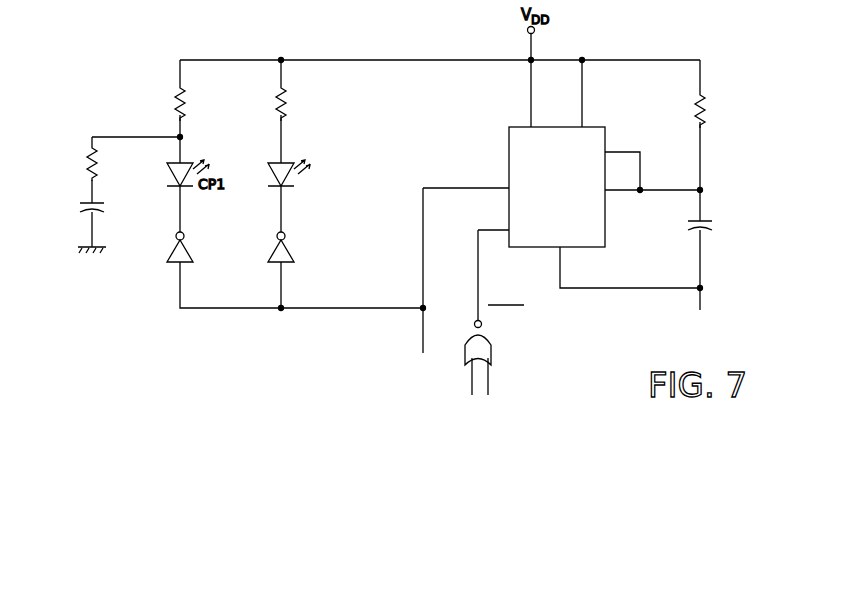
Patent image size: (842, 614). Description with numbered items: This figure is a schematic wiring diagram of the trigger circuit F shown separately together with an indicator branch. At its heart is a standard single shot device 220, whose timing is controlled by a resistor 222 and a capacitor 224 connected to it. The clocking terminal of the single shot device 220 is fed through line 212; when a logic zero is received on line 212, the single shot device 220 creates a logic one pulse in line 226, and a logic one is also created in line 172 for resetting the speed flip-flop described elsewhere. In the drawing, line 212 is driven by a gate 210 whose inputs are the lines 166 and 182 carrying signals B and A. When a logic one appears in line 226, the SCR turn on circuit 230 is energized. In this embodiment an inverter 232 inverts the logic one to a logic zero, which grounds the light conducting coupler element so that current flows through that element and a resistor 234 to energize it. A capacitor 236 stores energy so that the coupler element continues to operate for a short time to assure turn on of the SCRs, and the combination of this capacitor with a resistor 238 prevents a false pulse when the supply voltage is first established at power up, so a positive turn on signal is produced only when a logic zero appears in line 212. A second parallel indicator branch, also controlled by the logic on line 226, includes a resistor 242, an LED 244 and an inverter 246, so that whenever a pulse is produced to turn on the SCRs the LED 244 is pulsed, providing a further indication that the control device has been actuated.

The resistor 234 is at (174, 88).
The resistor 238 is at (88, 160).
The capacitor 236 is at (80, 209).
The inverter 232 is at (190, 256).
The SCR turn on circuit 230 is at (173, 325).
The resistor 242 is at (283, 103).
The LED 244 is at (286, 173).
The inverter 246 is at (290, 253).
The line 226 is at (448, 188).
The single shot device 220 is at (509, 141).
The resistor 222 is at (705, 112).
The capacitor 224 is at (714, 226).
The line 212 is at (480, 276).
The NOR gate 210 is at (488, 344).
The signal line B 166 is at (470, 373).
The signal line A 182 is at (492, 377).
The line 172 is at (422, 336).
The trigger circuit F is at (726, 38).